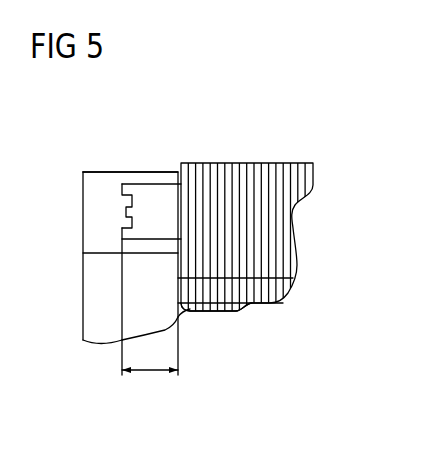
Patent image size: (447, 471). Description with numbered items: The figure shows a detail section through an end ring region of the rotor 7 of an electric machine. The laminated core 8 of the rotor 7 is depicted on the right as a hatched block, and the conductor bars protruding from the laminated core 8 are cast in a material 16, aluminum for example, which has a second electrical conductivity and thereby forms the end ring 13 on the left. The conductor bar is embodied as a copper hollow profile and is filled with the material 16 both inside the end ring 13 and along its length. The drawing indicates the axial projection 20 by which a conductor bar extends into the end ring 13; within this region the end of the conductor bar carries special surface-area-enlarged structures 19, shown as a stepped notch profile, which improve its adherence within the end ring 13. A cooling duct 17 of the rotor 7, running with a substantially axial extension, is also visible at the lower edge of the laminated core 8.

The rotor 7 is at (255, 192).
The laminated core 8 is at (260, 170).
The end ring 13 is at (102, 148).
The material with second electrical conductivity 16 is at (152, 179).
The cooling duct 17 is at (236, 307).
The surface-area-enlarged structures 19 is at (127, 213).
The axial projection 20 is at (150, 372).